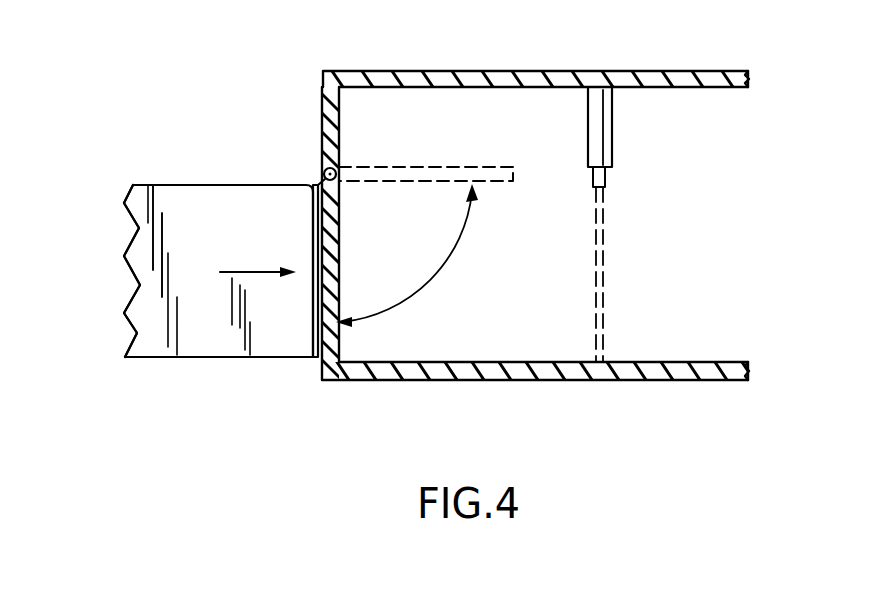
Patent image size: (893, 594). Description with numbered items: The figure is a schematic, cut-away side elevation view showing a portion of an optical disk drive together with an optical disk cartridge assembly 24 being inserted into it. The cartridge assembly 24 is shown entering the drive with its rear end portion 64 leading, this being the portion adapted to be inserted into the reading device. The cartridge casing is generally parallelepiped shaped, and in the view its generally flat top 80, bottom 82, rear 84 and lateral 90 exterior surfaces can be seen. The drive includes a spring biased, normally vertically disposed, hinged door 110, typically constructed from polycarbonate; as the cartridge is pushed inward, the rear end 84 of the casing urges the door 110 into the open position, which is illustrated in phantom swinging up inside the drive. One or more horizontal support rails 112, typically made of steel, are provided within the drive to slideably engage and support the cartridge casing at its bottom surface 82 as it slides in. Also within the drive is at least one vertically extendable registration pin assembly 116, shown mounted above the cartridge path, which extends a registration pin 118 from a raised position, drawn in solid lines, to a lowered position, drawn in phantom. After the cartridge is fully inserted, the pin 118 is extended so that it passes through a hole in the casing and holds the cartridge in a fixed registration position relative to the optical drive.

The optical disk cartridge assembly 24 is at (157, 178).
The rear end portion 64 is at (273, 240).
The top exterior surface 80 is at (274, 184).
The bottom exterior surface 82 is at (217, 357).
The rear exterior surface 84 is at (313, 306).
The lateral exterior surface 90 is at (164, 336).
The hinged door 110 is at (315, 220).
The horizontal support rail 112 is at (452, 364).
The registration pin assembly 116 is at (616, 117).
The registration pin 118 is at (603, 297).